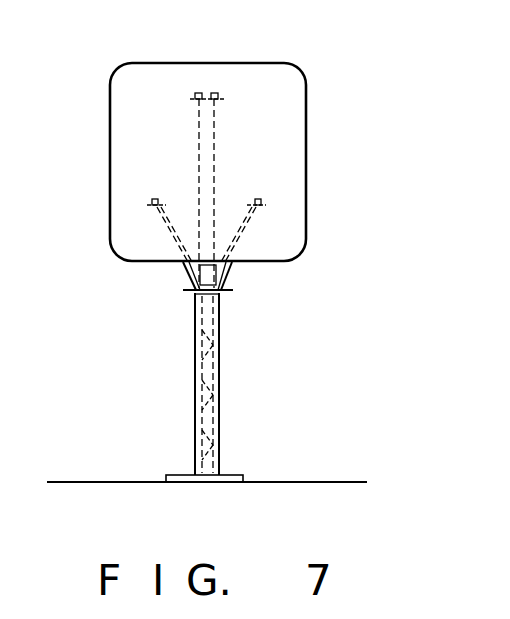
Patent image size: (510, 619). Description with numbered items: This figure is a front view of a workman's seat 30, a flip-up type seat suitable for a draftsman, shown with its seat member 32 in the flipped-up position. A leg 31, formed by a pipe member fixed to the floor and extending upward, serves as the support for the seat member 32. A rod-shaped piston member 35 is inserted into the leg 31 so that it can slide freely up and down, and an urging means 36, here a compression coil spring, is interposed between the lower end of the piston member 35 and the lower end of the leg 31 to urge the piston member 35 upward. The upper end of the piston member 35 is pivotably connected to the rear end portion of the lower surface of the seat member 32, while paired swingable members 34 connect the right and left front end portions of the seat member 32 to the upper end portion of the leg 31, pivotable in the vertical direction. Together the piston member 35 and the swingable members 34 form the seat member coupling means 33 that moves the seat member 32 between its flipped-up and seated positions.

The workman's seat 30 is at (218, 246).
The leg 31 is at (220, 420).
The seat member 32 is at (243, 82).
The seat member coupling means 33 is at (233, 283).
The paired swingable members 34 is at (187, 272).
The piston member 35 is at (216, 153).
The urging means 36 is at (200, 382).